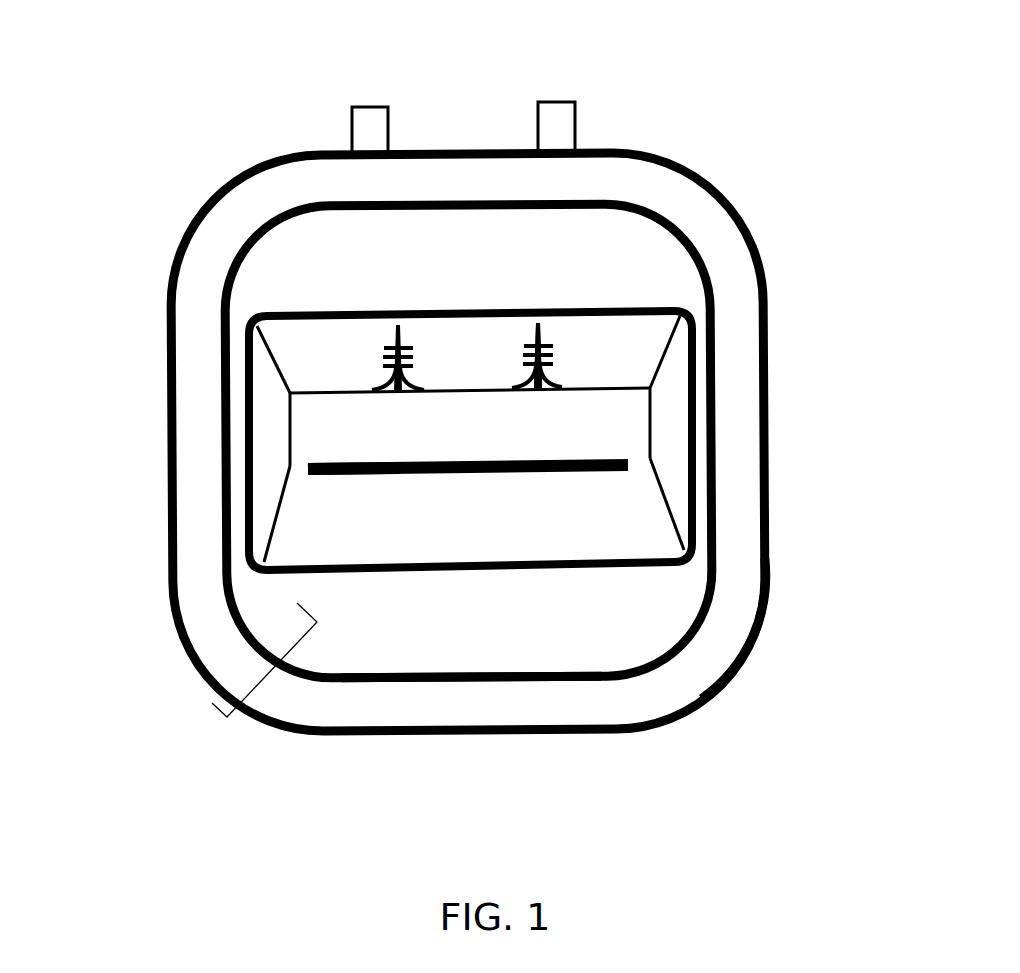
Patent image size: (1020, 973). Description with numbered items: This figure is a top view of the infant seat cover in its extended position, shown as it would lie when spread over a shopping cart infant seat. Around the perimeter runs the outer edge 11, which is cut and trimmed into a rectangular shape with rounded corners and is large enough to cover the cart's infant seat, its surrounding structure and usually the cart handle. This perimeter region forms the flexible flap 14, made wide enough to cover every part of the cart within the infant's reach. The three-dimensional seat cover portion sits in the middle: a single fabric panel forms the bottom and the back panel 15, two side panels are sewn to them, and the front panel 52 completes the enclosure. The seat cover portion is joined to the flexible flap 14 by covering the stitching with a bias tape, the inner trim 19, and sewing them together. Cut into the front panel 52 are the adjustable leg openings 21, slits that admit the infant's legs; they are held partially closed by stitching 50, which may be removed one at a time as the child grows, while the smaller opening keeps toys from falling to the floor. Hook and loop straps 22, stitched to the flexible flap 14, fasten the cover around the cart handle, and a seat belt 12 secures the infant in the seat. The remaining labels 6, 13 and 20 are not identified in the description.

The section line 6- 6 is at (250, 649).
The outer edge 11 is at (717, 198).
The seat belt 12 is at (357, 473).
The electrode bar 13 is at (632, 461).
The flexible flap 14 is at (743, 578).
The back panel 15 is at (480, 642).
The inner trim 19 is at (280, 313).
The inner rim 20 is at (285, 218).
The adjustable leg openings 21 is at (528, 353).
The hook and loop straps 22 is at (557, 120).
The stitching 50 is at (552, 343).
The front panel 52 is at (525, 548).